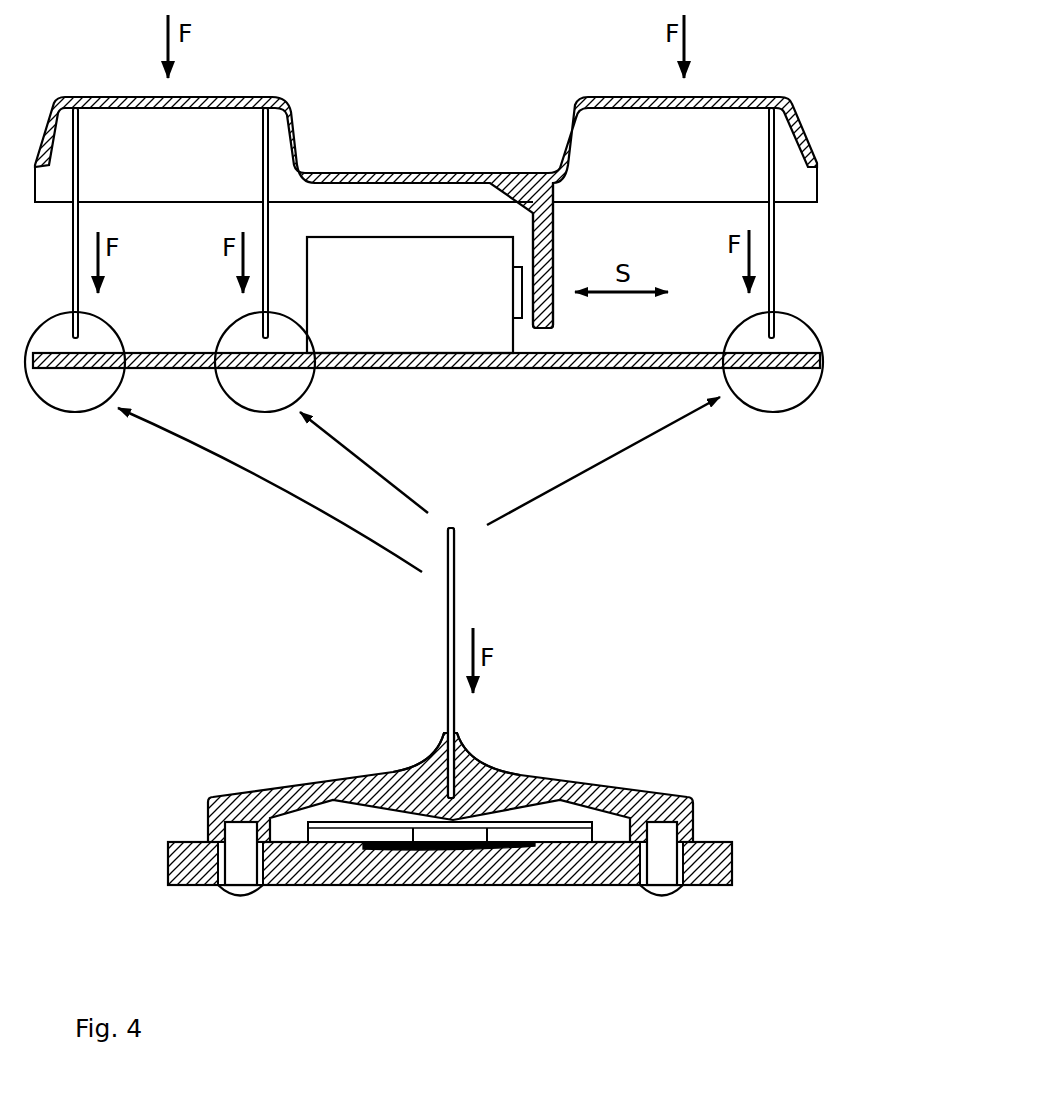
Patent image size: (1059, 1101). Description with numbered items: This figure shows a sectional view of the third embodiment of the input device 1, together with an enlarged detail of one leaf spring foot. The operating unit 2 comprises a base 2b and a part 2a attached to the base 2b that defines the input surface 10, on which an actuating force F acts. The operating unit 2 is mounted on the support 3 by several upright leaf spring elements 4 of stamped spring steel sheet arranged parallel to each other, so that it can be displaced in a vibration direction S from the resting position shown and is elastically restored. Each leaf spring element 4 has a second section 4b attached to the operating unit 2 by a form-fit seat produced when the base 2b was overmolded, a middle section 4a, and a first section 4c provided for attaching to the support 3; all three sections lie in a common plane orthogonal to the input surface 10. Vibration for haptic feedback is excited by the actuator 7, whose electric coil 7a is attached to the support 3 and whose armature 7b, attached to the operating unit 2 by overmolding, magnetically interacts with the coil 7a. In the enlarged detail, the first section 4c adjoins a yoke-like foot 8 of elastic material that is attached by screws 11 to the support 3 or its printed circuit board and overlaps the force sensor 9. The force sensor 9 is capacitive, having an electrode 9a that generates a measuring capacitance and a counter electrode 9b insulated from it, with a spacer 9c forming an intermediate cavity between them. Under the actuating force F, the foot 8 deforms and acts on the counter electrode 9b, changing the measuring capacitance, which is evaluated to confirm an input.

The input device 1 is at (866, 228).
The operating unit 2 is at (797, 112).
The part 2a is at (628, 103).
The base 2b is at (597, 143).
The support 3 is at (595, 368).
The leaf spring element 4 is at (70, 243).
The middle section 4a is at (437, 585).
The second section 4b is at (465, 528).
The first section 4c is at (463, 720).
The actuator 7 is at (414, 233).
The electric coil 7a is at (427, 304).
The armature 7b is at (545, 330).
The foot 8 is at (603, 788).
The force sensor 9 is at (438, 829).
The electrode 9a is at (510, 850).
The counter electrode 9b is at (322, 829).
The spacer 9c is at (567, 836).
The input surface 10 is at (360, 170).
The screws 11 is at (240, 880).